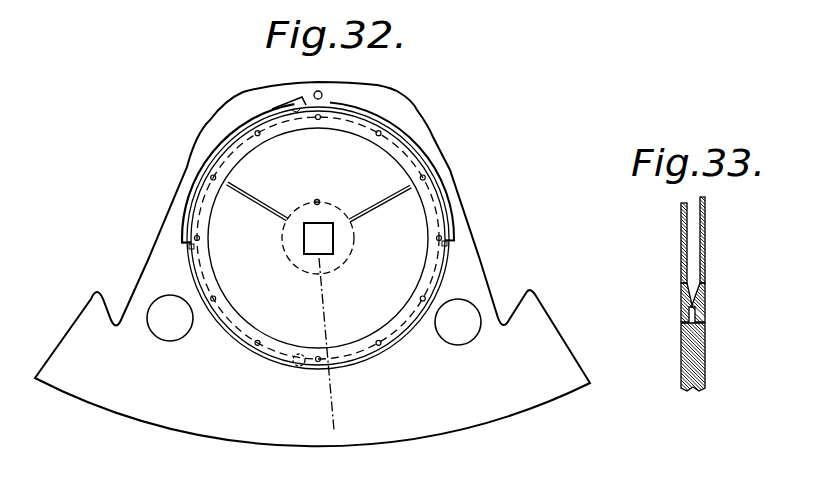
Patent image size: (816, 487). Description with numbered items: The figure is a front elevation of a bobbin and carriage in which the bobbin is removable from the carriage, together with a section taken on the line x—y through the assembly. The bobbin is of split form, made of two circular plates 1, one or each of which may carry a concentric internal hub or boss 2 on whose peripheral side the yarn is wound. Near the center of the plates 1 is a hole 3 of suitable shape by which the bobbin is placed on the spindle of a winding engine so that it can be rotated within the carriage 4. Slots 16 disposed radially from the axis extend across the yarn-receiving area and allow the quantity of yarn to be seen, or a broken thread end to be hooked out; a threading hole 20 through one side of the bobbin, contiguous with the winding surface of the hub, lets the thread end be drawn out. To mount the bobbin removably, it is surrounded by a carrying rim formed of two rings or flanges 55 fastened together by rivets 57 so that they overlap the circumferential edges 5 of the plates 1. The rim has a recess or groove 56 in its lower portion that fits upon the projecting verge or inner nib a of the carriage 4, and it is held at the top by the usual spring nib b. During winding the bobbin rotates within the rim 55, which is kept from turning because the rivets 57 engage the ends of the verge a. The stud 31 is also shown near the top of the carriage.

In FIG. 32, the circular plates 1 is at (318, 238).
In FIG. 33, the circular plates 1 is at (707, 237).
In FIG. 32, the internal hub or boss 2 is at (349, 262).
In FIG. 32, the hole 3 is at (318, 238).
In FIG. 32, the carriage 4 is at (312, 264).
In FIG. 33, the carriage 4 is at (707, 348).
In FIG. 32, the circumferential edges 5 is at (288, 347).
In FIG. 33, the circumferential edges 5 is at (700, 283).
In FIG. 32, the slots 16 is at (397, 194).
In FIG. 32, the threading hole 20 is at (318, 199).
In FIG. 32, the stud 31 is at (322, 95).
In FIG. 32, the rings or flanges 55 is at (208, 268).
In FIG. 33, the rings or flanges 55 is at (705, 297).
In FIG. 32, the recess or groove 56 is at (297, 113).
In FIG. 32, the rivets 57 is at (215, 178).
In FIG. 33, the rivets 57 is at (690, 298).
In FIG. 32, the verge or inner nib a is at (190, 250).
In FIG. 33, the verge or inner nib a is at (690, 322).
In FIG. 32, the spring nib b is at (285, 101).
In FIG. 32, the section line x—y x is at (317, 344).
In FIG. 32, the section line x— y is at (331, 437).